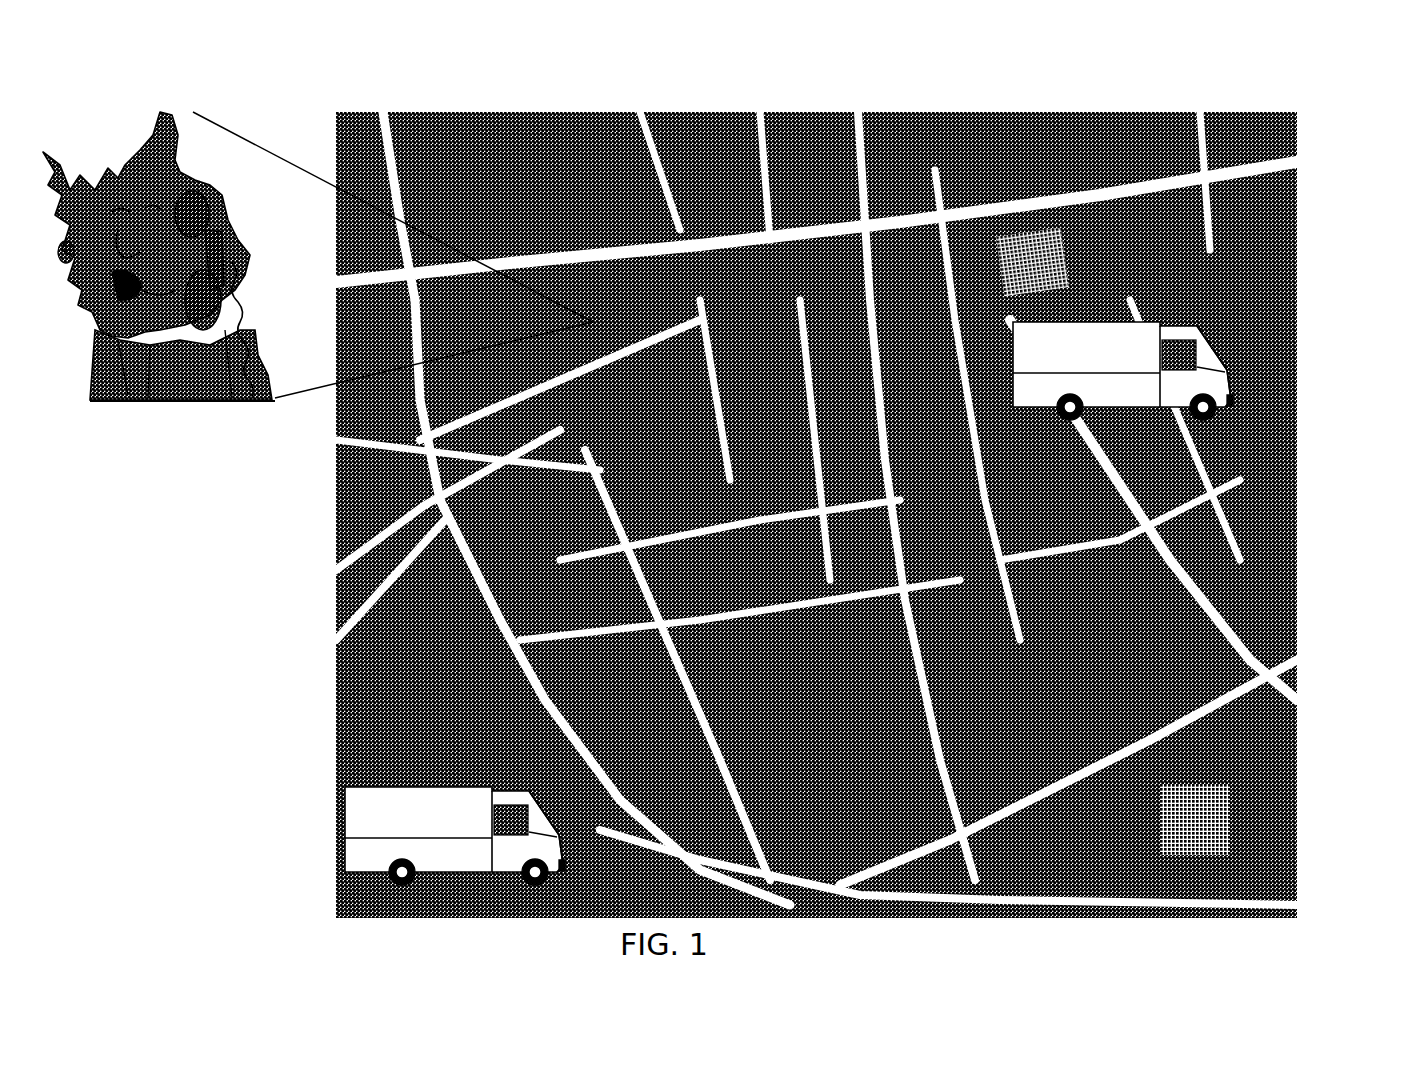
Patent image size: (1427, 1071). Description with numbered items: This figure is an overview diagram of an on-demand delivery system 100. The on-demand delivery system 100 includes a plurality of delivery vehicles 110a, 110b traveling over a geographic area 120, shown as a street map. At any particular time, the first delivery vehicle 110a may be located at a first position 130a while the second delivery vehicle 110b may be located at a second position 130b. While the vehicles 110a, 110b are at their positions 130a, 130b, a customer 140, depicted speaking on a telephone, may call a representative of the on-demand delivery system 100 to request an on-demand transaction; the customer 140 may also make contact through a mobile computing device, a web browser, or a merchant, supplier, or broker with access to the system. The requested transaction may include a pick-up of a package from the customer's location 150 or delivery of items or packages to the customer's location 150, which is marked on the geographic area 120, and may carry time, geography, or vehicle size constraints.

The on-demand delivery system 100 is at (1317, 80).
The first delivery vehicle 110a is at (478, 880).
The second delivery vehicle 110b is at (1118, 408).
The geographic area 120 is at (1282, 623).
The first position 130a is at (338, 847).
The second position 130b is at (1235, 383).
The customer 140 is at (190, 407).
The customer's location 150 is at (592, 318).